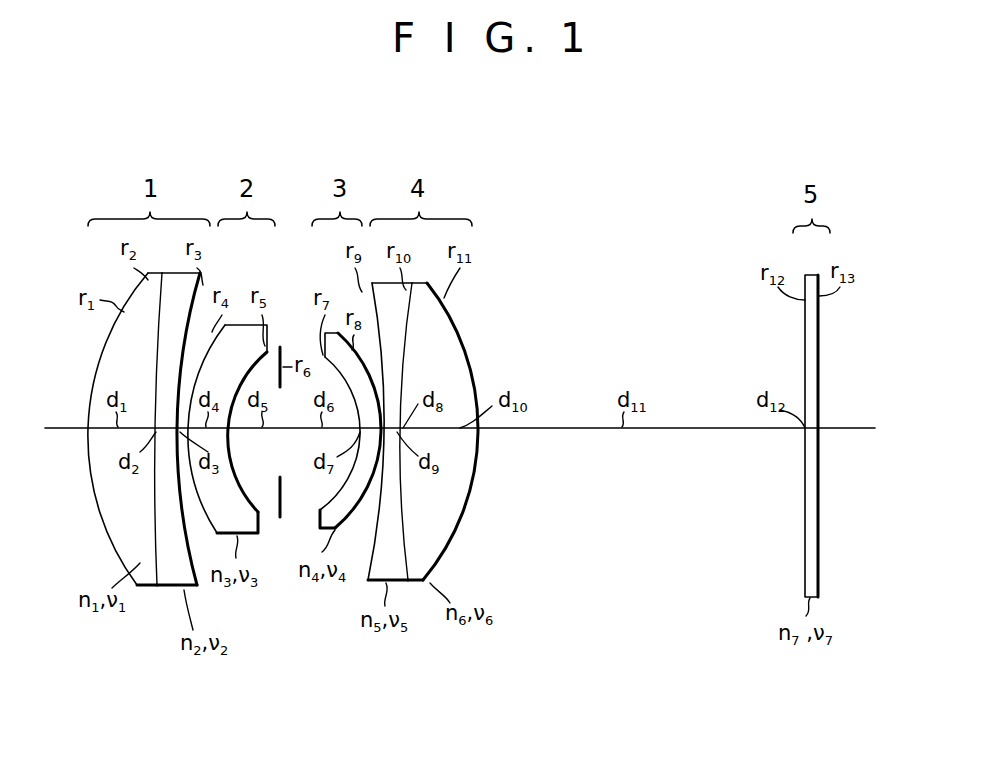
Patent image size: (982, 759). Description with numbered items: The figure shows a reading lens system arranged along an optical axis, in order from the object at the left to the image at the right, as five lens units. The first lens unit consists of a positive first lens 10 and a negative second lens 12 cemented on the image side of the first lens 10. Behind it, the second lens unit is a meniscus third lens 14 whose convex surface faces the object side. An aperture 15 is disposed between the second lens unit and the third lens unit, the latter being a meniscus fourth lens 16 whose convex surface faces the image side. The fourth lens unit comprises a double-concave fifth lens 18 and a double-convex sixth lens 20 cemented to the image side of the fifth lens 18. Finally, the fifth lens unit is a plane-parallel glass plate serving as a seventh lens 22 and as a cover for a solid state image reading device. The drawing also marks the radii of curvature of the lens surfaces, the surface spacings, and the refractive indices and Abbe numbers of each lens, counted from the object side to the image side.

The first lens 10 is at (124, 516).
The second lens 12 is at (166, 588).
The third lens 14 is at (240, 508).
The aperture 15 is at (286, 478).
The fourth lens 16 is at (320, 530).
The fifth lens 18 is at (368, 581).
The sixth lens 20 is at (436, 550).
The seventh lens 22 is at (805, 572).